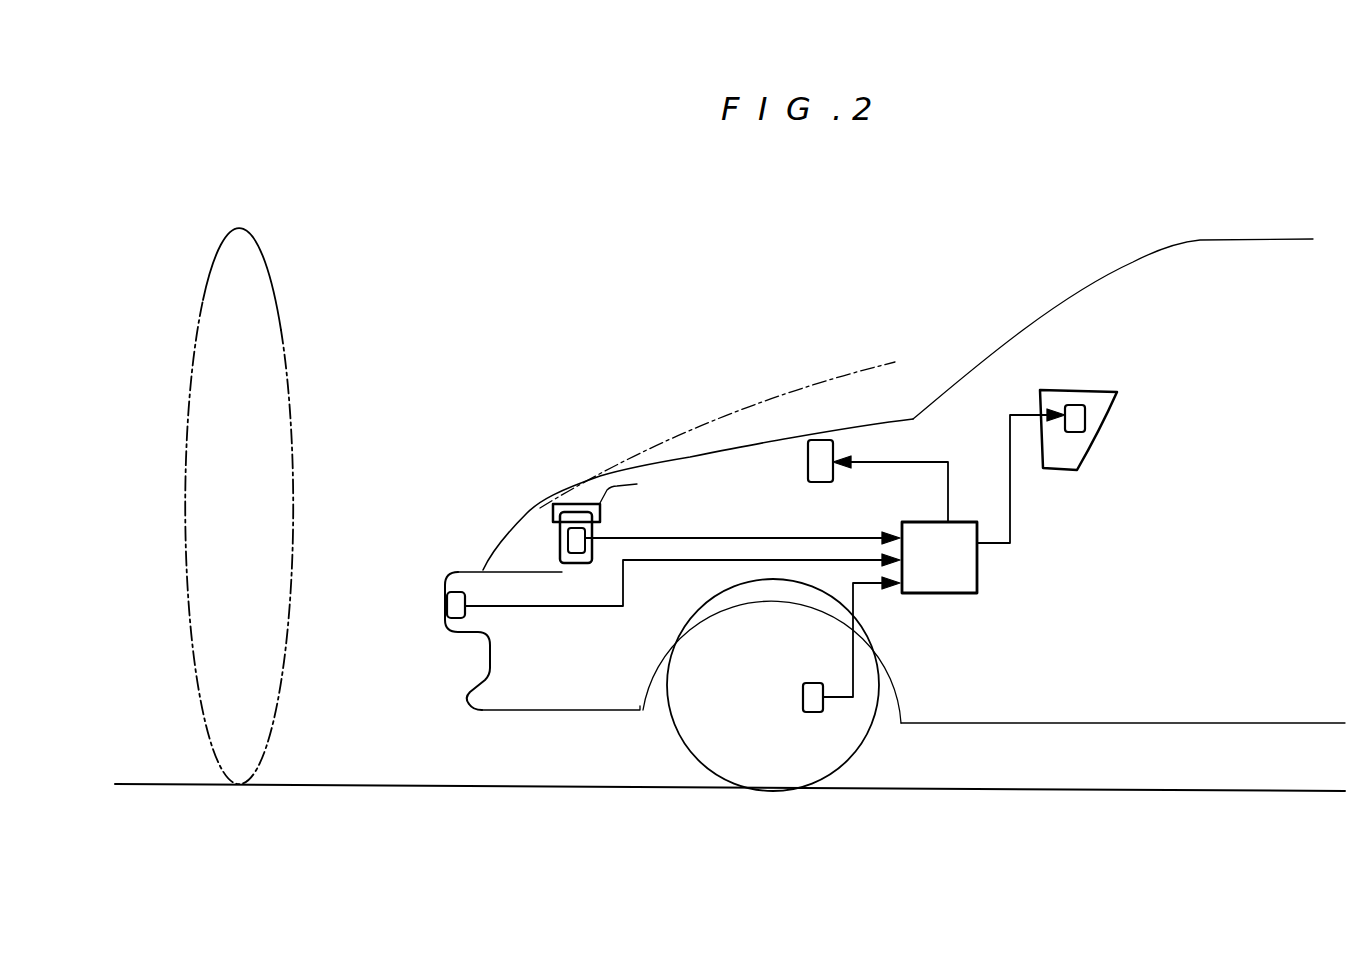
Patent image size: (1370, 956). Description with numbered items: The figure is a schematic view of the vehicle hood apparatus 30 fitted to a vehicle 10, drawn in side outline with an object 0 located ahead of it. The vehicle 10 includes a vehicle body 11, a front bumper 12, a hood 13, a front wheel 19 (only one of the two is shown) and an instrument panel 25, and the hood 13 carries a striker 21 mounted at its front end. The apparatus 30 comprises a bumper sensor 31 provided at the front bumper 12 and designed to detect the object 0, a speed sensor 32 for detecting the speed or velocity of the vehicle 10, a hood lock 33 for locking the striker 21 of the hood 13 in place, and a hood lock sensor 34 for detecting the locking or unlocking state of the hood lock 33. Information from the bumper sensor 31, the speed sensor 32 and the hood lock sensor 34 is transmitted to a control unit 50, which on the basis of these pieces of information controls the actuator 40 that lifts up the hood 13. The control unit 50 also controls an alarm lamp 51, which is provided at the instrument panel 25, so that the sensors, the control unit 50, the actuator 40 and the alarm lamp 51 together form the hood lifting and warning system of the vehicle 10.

The vehicle 10 is at (506, 104).
The object 0 is at (270, 280).
The vehicle body 11 is at (1010, 742).
The front bumper 12 is at (445, 632).
The hood 13 is at (743, 445).
The front wheel 19 is at (680, 733).
The striker 21 is at (553, 510).
The instrument panel 25 is at (1080, 387).
The vehicle hood apparatus 30 is at (578, 378).
The bumper sensor 31 is at (443, 598).
The speed sensor 32 is at (808, 683).
The hood lock 33 is at (560, 553).
The hood lock sensor 34 is at (558, 548).
The actuator 40 is at (820, 440).
The control unit 50 is at (980, 575).
The alarm lamp 51 is at (1086, 415).